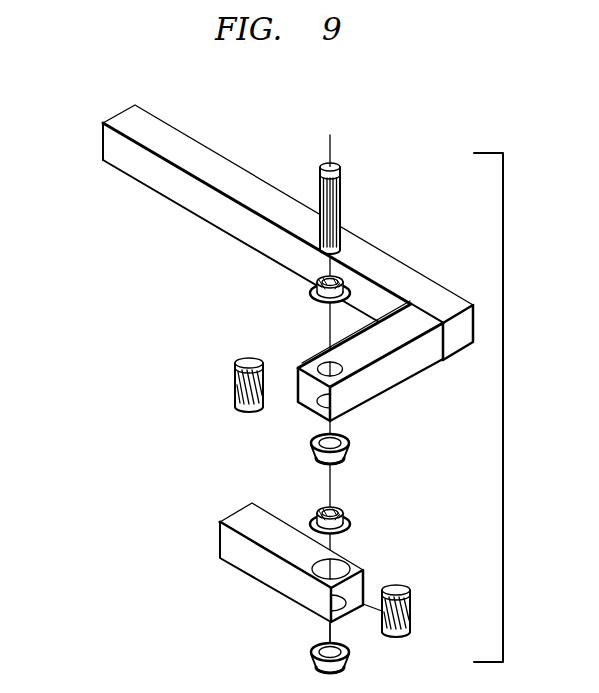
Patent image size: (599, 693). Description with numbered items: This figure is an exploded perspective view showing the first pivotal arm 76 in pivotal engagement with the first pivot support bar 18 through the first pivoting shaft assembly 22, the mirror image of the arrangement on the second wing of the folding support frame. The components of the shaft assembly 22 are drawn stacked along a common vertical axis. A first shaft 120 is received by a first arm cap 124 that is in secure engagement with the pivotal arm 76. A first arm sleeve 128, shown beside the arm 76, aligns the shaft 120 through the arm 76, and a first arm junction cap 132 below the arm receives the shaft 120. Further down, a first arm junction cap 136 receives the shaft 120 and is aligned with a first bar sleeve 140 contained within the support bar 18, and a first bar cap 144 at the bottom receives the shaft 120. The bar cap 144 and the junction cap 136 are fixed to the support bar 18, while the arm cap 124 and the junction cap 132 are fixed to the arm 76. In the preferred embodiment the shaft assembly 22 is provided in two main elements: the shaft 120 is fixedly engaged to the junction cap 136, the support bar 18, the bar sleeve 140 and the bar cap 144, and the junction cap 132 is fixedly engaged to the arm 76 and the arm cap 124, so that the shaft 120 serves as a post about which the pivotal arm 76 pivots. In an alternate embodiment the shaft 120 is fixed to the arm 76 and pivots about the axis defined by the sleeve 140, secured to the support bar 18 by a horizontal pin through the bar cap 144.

The first pivoting shaft assembly 22 is at (503, 408).
The first pivotal arm 76 is at (198, 203).
The first shaft 120 is at (320, 250).
The first arm cap 124 is at (310, 298).
The first arm sleeve 128 is at (311, 386).
The first arm junction cap 132 is at (312, 452).
The first arm junction cap 136 is at (348, 512).
The first pivot support bar 18 is at (262, 568).
The first bar sleeve 140 is at (410, 613).
The first bar cap 144 is at (312, 661).